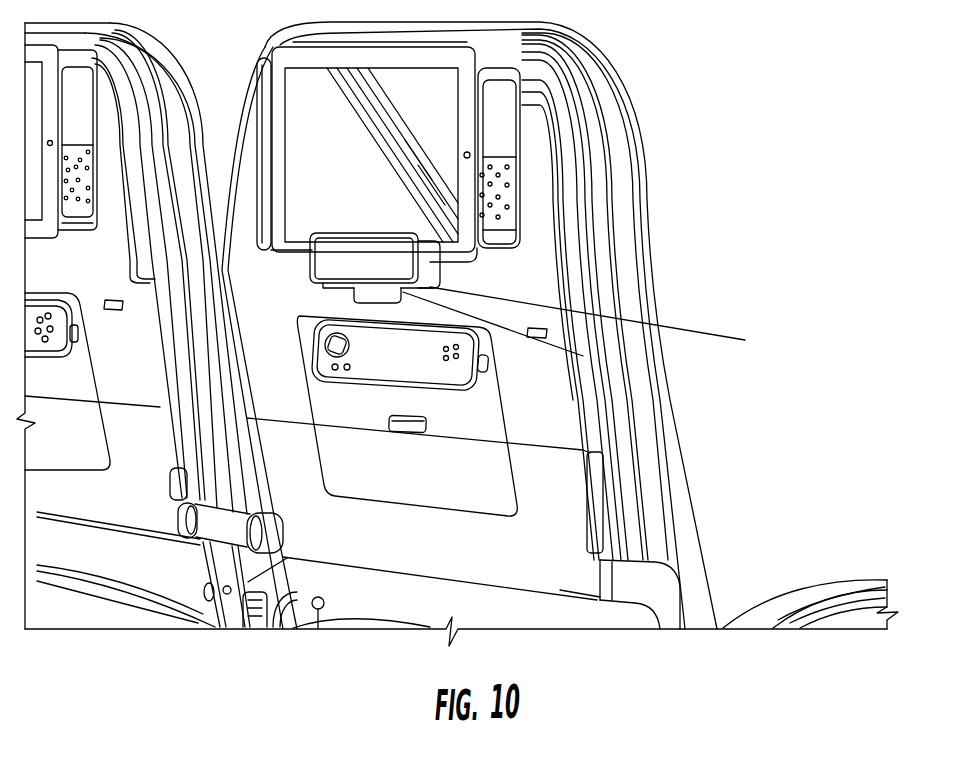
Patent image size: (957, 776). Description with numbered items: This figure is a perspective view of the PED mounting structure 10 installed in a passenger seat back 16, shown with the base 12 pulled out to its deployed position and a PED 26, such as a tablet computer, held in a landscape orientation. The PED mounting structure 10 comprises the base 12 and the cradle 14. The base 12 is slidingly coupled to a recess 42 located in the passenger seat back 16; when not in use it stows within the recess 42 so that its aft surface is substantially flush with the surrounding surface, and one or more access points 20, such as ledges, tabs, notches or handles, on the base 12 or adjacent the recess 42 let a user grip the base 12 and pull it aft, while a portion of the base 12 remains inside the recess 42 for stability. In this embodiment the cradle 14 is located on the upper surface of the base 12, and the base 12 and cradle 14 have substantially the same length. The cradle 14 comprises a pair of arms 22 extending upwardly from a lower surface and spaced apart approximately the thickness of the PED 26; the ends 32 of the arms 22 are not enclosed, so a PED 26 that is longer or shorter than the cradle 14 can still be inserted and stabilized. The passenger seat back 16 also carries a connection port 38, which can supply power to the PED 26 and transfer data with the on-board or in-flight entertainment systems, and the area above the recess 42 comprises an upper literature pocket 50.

The PED mounting structure 10 is at (478, 246).
The base 12 is at (430, 297).
The cradle 14 is at (440, 266).
The passenger seat back 16 is at (480, 44).
The access point 20 is at (377, 291).
The arm 22 is at (350, 249).
The PED 26 is at (343, 103).
The ends of arms 32 is at (314, 273).
The connection port 38 is at (547, 334).
The recess 42 is at (595, 322).
The upper literature pocket 50 is at (490, 131).